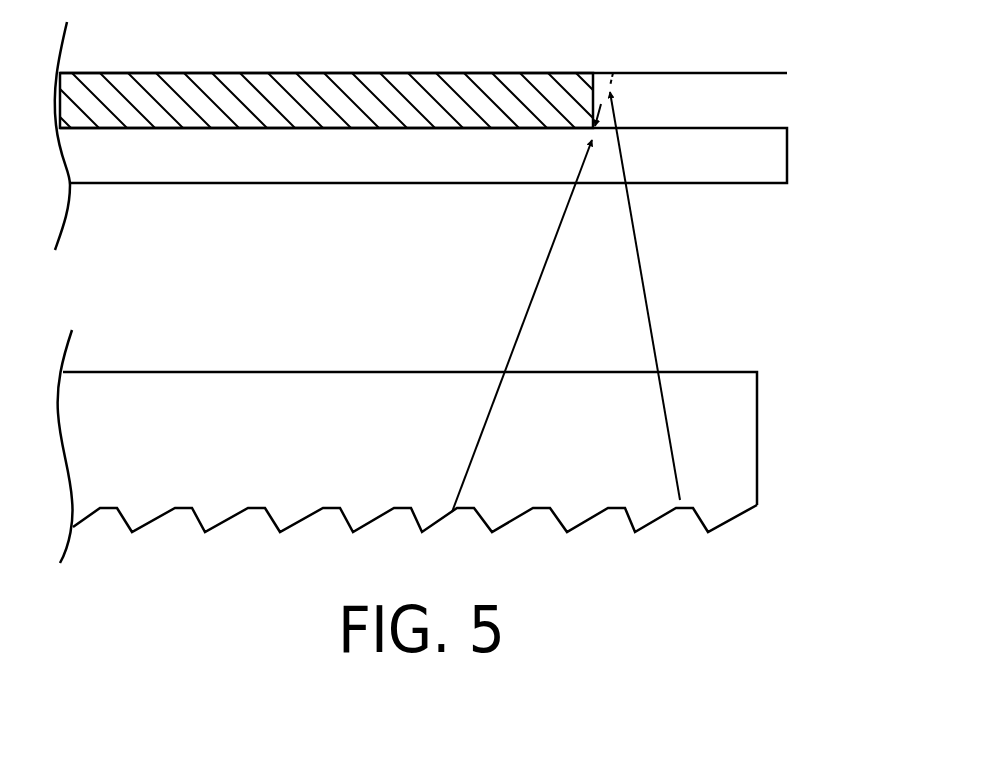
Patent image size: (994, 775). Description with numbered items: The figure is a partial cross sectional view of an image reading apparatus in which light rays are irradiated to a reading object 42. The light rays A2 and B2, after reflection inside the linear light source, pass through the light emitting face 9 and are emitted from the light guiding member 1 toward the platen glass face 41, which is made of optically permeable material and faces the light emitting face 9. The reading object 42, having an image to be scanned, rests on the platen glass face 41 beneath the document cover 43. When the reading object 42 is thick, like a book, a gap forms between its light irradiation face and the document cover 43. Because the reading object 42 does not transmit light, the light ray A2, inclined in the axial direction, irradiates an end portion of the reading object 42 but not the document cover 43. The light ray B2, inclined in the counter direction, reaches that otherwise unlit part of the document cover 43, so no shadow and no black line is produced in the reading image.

The light guiding member 1 is at (367, 493).
The light emitting face 9 is at (223, 372).
The platen glass face 41 is at (328, 166).
The reading object 42 is at (340, 92).
The document cover 43 is at (695, 73).
The light ray A2 is at (523, 315).
The light ray B2 is at (650, 285).